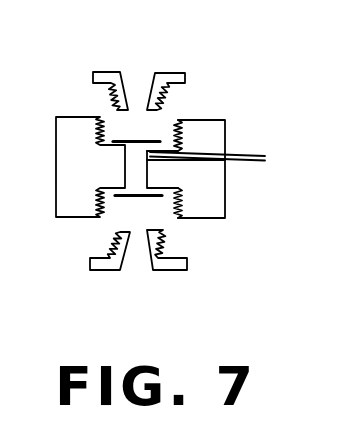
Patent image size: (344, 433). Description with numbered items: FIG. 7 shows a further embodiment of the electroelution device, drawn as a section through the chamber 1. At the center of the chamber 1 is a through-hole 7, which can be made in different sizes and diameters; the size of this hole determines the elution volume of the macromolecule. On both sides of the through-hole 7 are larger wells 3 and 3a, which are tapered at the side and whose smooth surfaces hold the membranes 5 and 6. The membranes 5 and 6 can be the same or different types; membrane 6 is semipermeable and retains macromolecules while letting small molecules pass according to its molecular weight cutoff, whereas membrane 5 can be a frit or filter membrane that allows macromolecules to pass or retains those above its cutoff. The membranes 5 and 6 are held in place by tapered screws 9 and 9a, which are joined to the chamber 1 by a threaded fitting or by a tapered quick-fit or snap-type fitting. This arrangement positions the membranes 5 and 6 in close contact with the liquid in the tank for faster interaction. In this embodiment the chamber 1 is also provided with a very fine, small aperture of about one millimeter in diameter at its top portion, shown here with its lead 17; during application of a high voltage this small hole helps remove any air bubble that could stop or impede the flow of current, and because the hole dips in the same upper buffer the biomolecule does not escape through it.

The chamber 1 is at (227, 188).
The well 3 is at (153, 131).
The well 3a is at (153, 210).
The membrane 5 is at (120, 135).
The membrane 6 is at (120, 198).
The through-hole 7 is at (150, 171).
The tapered screw 9 is at (187, 72).
The tapered screw 9a is at (173, 265).
The actuating rod 17 is at (243, 154).